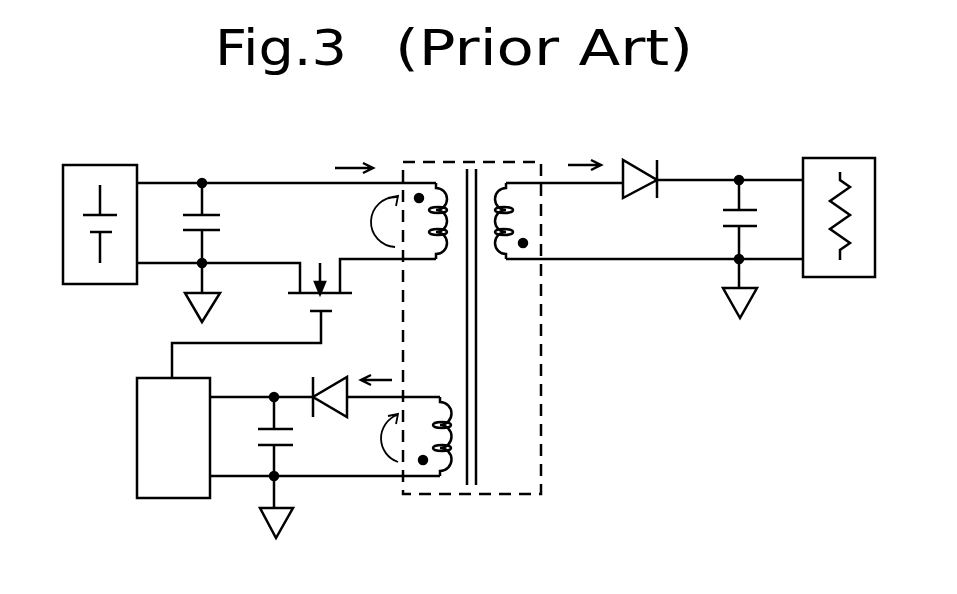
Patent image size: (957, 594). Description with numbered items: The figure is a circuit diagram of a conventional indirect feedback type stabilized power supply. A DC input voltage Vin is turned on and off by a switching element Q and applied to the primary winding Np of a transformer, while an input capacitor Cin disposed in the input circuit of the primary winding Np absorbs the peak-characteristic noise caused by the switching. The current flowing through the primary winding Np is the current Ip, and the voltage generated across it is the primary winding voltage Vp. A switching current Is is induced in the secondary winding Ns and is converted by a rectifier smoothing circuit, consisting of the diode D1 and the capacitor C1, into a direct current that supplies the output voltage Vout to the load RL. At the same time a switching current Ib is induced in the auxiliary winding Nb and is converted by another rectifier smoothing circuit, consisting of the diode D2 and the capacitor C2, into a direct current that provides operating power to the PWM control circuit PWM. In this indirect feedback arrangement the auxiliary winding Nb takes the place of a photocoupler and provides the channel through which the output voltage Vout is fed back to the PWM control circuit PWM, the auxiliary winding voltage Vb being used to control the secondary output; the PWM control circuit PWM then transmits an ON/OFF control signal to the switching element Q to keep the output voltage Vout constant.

The DC input voltage Vin is at (93, 172).
The input capacitor Cin is at (223, 224).
The primary winding current Ip is at (354, 153).
The primary winding voltage Vp is at (364, 221).
The primary winding Np is at (432, 241).
The secondary winding Ns is at (508, 241).
The switching current Is is at (584, 152).
The diode D1 is at (633, 199).
The output voltage Vout is at (752, 164).
The capacitor C1 is at (722, 219).
The load RL is at (838, 169).
The switching element Q is at (334, 283).
The PWM control circuit PWM is at (173, 438).
The diode D2 is at (310, 388).
The capacitor C2 is at (256, 447).
The switching current Ib is at (376, 367).
The auxiliary winding voltage Vb is at (370, 439).
The auxiliary winding Nb is at (435, 418).